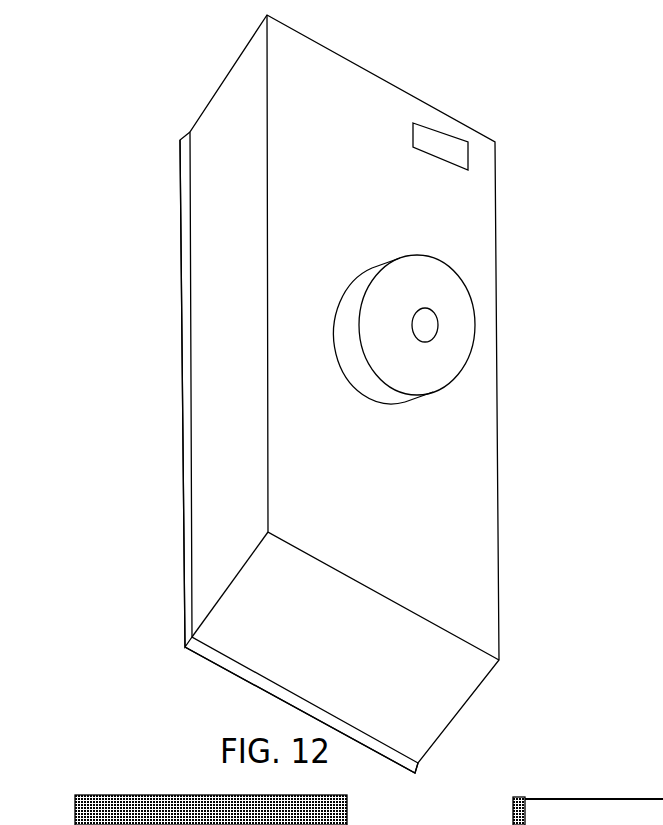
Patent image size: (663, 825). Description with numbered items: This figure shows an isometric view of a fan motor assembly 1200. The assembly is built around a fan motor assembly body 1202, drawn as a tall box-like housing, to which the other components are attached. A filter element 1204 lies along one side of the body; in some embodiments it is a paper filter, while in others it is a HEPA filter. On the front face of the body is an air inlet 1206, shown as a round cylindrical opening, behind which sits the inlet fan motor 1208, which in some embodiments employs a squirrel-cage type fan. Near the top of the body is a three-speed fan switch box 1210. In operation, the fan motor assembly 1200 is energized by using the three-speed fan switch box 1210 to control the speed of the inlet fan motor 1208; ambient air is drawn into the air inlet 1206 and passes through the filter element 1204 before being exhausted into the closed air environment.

The fan motor assembly 1200 is at (325, 394).
The fan motor assembly body 1202 is at (472, 244).
The filter element 1204 is at (187, 605).
The air inlet 1206 is at (475, 315).
The inlet fan motor 1208 is at (423, 325).
The three-speed fan switch box 1210 is at (443, 147).